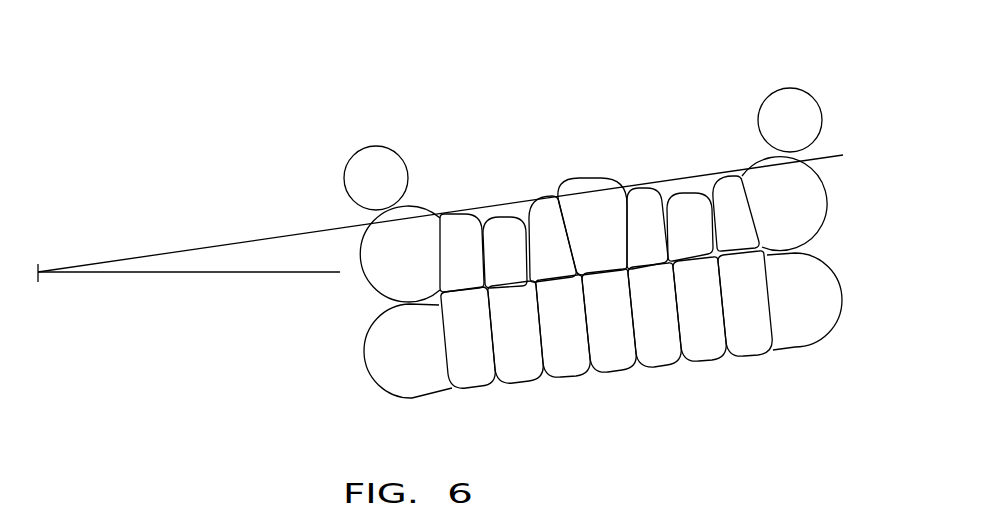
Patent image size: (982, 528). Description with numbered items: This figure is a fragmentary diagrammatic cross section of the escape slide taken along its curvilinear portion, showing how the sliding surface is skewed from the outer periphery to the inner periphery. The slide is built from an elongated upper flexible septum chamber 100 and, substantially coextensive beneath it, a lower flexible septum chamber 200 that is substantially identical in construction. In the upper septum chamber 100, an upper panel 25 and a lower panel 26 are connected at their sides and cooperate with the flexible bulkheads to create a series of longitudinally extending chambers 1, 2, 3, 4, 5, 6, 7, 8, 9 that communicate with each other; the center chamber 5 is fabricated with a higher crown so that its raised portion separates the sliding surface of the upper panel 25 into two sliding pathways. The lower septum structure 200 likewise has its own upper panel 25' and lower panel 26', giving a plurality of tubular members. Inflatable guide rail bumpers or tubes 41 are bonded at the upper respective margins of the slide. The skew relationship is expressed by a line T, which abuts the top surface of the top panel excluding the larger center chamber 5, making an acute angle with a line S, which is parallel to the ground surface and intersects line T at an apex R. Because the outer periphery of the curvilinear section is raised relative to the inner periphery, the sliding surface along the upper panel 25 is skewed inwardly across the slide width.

The chamber 1 is at (388, 273).
The chamber 2 is at (455, 238).
The chamber 3 is at (503, 233).
The chamber 4 is at (545, 228).
The center chamber 5 is at (590, 210).
The chamber 6 is at (643, 210).
The chamber 7 is at (685, 205).
The chamber 8 is at (728, 197).
The chamber 9 is at (810, 187).
The upper panel 25 is at (489, 172).
The upper panel 25' is at (688, 233).
The lower panel 26 is at (468, 337).
The lower panel 26' is at (673, 347).
The inflatable guide rail bumper 41 is at (360, 150).
The upper flexible septum chamber 100 is at (838, 193).
The lower flexible septum chamber 200 is at (848, 305).
The apex R is at (40, 275).
The line S is at (255, 274).
The line T is at (265, 238).